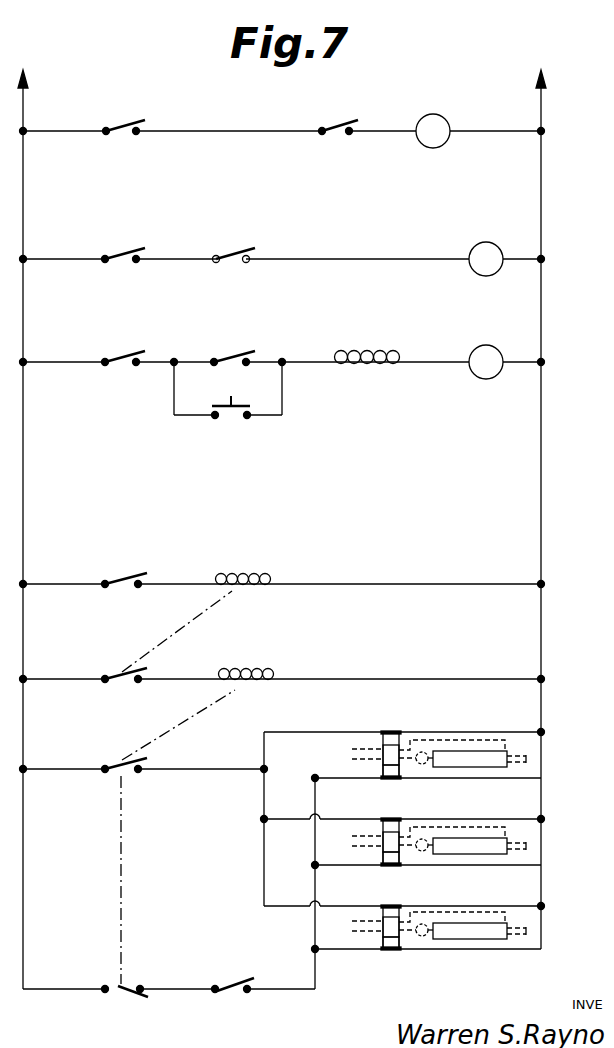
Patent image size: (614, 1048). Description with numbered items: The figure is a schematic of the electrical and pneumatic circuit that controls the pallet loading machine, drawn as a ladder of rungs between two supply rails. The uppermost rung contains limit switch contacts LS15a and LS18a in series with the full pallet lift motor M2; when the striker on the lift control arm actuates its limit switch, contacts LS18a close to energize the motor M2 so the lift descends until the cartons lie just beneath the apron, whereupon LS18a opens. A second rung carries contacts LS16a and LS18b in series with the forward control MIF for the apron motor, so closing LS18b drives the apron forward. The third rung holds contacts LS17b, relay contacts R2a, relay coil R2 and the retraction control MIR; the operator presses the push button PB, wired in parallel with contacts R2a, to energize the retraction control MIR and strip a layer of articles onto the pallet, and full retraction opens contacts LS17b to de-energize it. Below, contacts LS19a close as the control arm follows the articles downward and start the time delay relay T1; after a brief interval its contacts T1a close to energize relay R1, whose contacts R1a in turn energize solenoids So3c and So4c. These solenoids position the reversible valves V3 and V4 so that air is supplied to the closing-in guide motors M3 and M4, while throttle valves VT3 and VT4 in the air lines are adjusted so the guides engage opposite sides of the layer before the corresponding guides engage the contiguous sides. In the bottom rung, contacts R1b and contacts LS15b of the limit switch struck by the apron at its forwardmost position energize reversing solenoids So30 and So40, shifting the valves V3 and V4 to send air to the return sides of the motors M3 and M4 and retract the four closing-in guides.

The contacts of limit switch LS15 LS15a is at (141, 116).
The contacts of limit switch LS18 LS18a is at (364, 111).
The full pallet lift motor M2 is at (433, 131).
The contacts of limit switch LS16 LS16a is at (141, 244).
The contacts of limit switch LS18 LS18b is at (260, 240).
The forward control for apron motor MIF is at (486, 259).
The contacts of limit switch LS17 LS17b is at (154, 335).
The contacts of relay R2 R2a is at (251, 332).
The push button PB is at (243, 411).
The relay coil R2 is at (378, 335).
The retraction control for apron motor MIR is at (486, 362).
The contacts of limit switch LS19 LS19a is at (151, 548).
The time delay relay T1 is at (238, 576).
The contacts of time delay relay T1a is at (113, 668).
The relay R1 is at (257, 659).
The contacts of relay R1 R1a is at (115, 758).
The contacts of limit switch LS15 LS15b is at (255, 958).
The contacts of relay R1 R1b is at (116, 998).
The solenoid of reversible valve V3 So3c is at (390, 819).
The reversing solenoid of valve V3 So30 is at (392, 778).
The reversible valve V3 is at (352, 800).
The closing-in guide motor M3 is at (462, 797).
The throttle valve VT3 is at (422, 764).
The solenoid of reversible valve V4 So4c is at (390, 906).
The reversing solenoid of valve V4 So40 is at (392, 949).
The reversible valve V4 is at (352, 929).
The closing-in guide motor M4 is at (462, 925).
The throttle valve VT4 is at (422, 936).